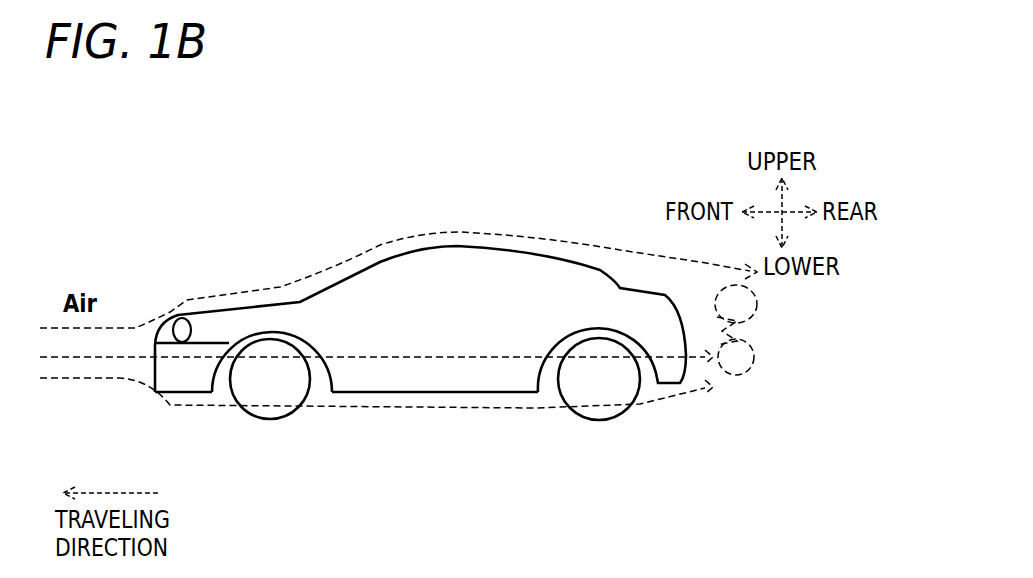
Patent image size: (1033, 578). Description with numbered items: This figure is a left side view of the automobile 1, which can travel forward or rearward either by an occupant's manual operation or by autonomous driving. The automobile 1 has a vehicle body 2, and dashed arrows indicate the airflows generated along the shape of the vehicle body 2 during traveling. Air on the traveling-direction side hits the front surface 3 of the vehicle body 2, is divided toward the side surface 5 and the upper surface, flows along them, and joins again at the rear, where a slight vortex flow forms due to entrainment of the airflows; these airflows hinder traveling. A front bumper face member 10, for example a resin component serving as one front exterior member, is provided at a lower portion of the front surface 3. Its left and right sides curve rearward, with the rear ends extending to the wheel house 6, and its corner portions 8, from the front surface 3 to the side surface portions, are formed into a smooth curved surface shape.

The automobile 1 is at (398, 303).
The vehicle body 2 is at (450, 232).
The front surface 3 is at (157, 345).
The side surface 5 is at (483, 372).
The wheel house 6 is at (227, 372).
The corner portion 8 is at (158, 385).
The front bumper face member 10 is at (193, 368).